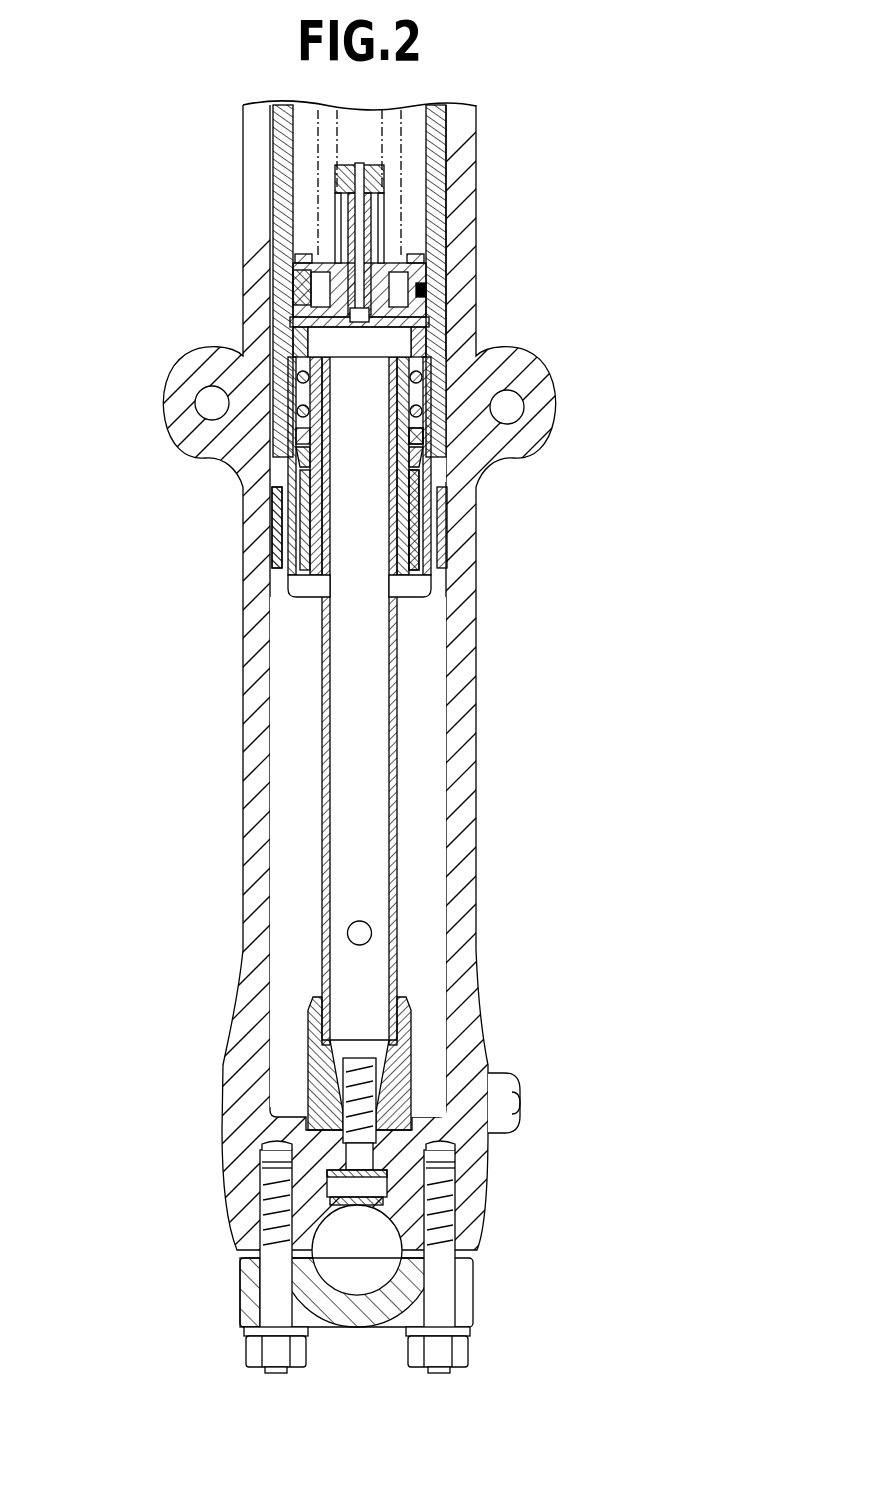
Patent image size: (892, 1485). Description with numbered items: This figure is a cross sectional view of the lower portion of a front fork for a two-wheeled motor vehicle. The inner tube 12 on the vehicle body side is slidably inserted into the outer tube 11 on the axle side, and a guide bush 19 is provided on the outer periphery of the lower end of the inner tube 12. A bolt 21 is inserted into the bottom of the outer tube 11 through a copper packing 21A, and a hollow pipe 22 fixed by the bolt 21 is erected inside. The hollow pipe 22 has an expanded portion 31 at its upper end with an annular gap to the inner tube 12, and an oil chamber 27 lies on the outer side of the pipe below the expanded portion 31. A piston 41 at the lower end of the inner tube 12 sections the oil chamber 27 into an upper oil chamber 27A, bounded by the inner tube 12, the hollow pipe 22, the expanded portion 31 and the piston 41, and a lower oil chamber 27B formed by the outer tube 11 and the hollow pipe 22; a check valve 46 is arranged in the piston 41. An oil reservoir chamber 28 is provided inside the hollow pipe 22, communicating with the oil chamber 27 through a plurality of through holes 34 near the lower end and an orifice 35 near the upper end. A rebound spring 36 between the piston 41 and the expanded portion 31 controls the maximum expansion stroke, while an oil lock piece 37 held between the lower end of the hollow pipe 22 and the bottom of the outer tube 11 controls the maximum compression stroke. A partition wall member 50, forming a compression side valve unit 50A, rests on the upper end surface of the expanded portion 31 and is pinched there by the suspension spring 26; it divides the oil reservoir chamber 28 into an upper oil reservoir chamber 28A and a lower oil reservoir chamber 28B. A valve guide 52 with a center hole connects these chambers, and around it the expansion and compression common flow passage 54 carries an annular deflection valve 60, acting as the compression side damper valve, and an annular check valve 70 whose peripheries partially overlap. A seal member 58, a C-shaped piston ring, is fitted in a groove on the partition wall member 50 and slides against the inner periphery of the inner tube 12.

The outer tube 11 is at (252, 836).
The inner tube 12 is at (283, 212).
The guide bush 19 is at (275, 522).
The bolt 21 is at (347, 1188).
The copper packing 21A is at (328, 1175).
The hollow pipe 22 is at (398, 765).
The suspension spring 26 is at (392, 250).
The oil chamber 27 is at (425, 853).
The upper oil chamber 27A is at (440, 390).
The lower oil chamber 27B is at (420, 985).
The oil reservoir chamber 28 is at (375, 645).
The upper oil reservoir chamber 28A is at (330, 137).
The lower oil reservoir chamber 28B is at (342, 712).
The expanded portion 31 is at (437, 333).
The through holes 34 is at (372, 932).
The orifice 35 is at (326, 495).
The rebound spring 36 is at (292, 365).
The oil lock piece 37 is at (315, 1032).
The piston 41 is at (420, 542).
The check valve 46 is at (423, 462).
The partition wall member 50 is at (398, 282).
The compression side valve unit 50A is at (393, 190).
The valve guide 52 is at (378, 205).
The expansion and compression common flow passage 54 is at (392, 330).
The seal member 58 is at (424, 290).
The deflection valve 60 is at (305, 255).
The check valve 70 is at (305, 290).